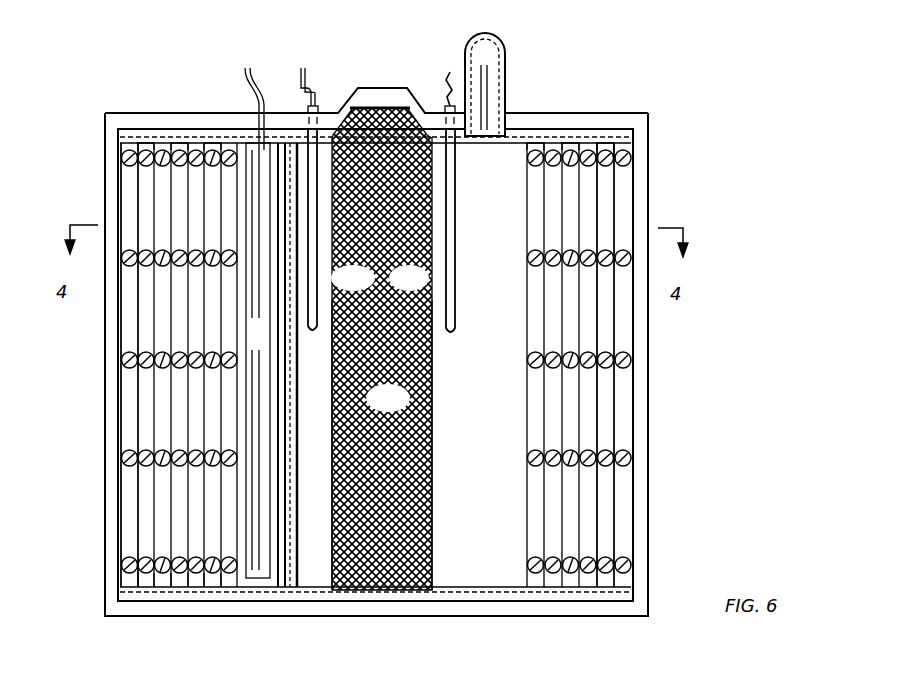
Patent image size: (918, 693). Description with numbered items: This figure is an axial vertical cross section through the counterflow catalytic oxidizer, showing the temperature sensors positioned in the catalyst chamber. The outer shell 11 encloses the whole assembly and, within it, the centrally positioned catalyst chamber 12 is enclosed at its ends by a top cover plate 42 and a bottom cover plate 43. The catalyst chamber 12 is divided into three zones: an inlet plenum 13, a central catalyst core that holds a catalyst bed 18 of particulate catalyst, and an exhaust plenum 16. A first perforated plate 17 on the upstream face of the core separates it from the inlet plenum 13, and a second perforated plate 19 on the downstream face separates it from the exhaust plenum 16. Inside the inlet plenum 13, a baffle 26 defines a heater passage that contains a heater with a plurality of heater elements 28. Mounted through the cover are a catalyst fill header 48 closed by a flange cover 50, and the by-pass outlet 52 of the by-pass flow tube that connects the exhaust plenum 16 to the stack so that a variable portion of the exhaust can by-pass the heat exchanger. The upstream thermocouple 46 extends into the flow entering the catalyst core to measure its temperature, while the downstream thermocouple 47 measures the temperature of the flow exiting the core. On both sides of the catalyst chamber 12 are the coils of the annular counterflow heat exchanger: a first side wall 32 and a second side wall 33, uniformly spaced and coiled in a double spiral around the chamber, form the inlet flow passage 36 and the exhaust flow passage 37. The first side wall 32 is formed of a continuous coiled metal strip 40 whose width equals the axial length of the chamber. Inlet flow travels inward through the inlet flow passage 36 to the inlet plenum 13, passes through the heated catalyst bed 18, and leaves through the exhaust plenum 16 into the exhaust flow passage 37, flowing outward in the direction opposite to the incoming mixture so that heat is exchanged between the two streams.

The outer shell 11 is at (113, 408).
The catalyst chamber 12 is at (423, 110).
The inlet plenum 13 is at (324, 440).
The exhaust plenum 16 is at (484, 406).
The first perforated plate 17 is at (333, 517).
The catalyst bed 18 is at (400, 408).
The second perforated plate 19 is at (435, 497).
The baffle 26 is at (293, 376).
The heater elements 28 is at (271, 345).
The first side wall 32 is at (155, 300).
The second side wall 33 is at (137, 330).
The inlet flow passage 36 is at (213, 197).
The exhaust flow passage 37 is at (228, 232).
The continuous coiled metal strip 40 is at (218, 134).
The top cover plate 42 is at (280, 133).
The bottom cover plate 43 is at (285, 604).
The upstream thermocouple 46 is at (320, 296).
The downstream thermocouple 47 is at (444, 293).
The catalyst fill header 48 is at (312, 128).
The flange cover 50 is at (393, 107).
The by-pass outlet 52 is at (503, 44).